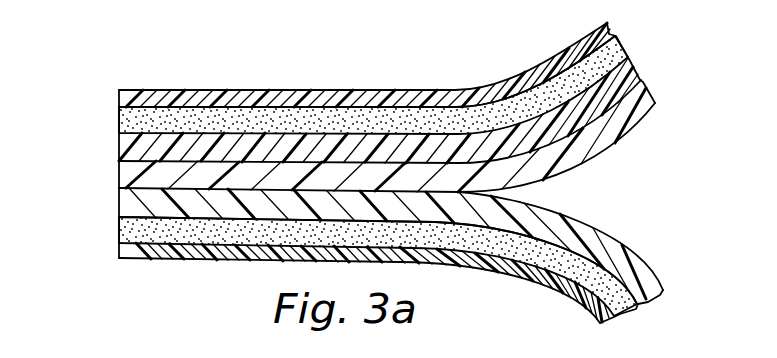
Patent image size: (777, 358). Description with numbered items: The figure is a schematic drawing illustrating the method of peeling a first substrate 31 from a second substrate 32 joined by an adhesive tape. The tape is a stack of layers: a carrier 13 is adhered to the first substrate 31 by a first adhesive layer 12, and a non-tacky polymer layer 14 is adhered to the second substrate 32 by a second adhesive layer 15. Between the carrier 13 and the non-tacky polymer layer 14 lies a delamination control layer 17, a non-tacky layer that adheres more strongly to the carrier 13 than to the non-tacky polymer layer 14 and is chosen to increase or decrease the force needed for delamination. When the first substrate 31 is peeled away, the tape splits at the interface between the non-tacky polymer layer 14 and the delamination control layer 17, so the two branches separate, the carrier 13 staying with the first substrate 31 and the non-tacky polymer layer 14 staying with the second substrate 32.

The first substrate 31 is at (121, 99).
The first adhesive layer 12 is at (120, 118).
The delamination control layer 17 is at (123, 168).
The non-tacky polymer layer 14 is at (123, 198).
The second substrate 32 is at (124, 253).
The carrier 13 is at (627, 73).
The second adhesive layer 15 is at (623, 302).